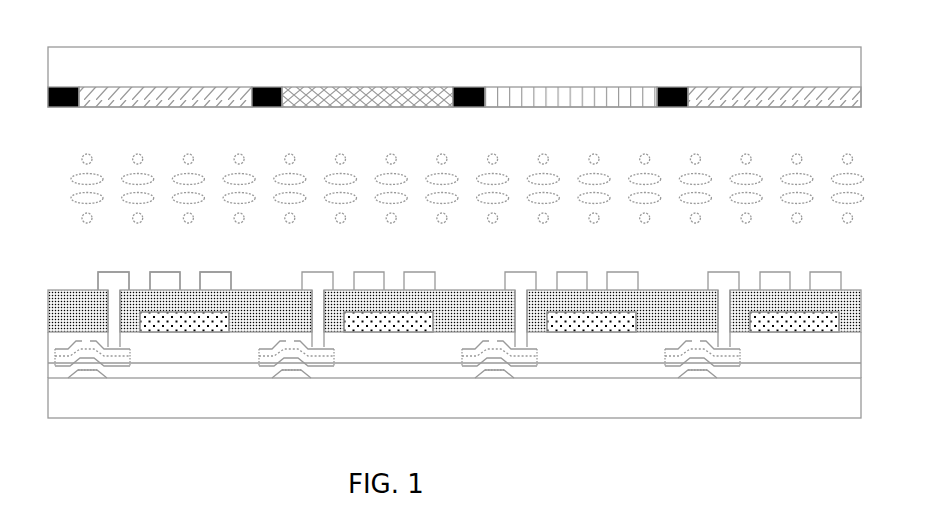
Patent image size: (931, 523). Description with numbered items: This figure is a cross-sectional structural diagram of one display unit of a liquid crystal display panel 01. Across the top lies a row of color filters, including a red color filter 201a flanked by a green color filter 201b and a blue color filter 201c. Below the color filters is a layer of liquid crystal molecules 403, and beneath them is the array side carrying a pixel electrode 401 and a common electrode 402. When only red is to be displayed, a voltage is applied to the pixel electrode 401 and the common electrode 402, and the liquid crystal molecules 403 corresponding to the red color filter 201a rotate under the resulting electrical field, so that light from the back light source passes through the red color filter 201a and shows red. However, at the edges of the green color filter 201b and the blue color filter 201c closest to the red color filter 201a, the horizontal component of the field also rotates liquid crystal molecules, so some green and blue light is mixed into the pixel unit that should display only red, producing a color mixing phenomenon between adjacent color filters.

The liquid crystal display panel 01 is at (413, 15).
The red color filter 201a is at (368, 95).
The green color filter 201b is at (593, 95).
The blue color filter 201c is at (168, 95).
The pixel electrode 401 is at (231, 268).
The common electrode 402 is at (187, 320).
The liquid crystal molecules 403 is at (90, 178).